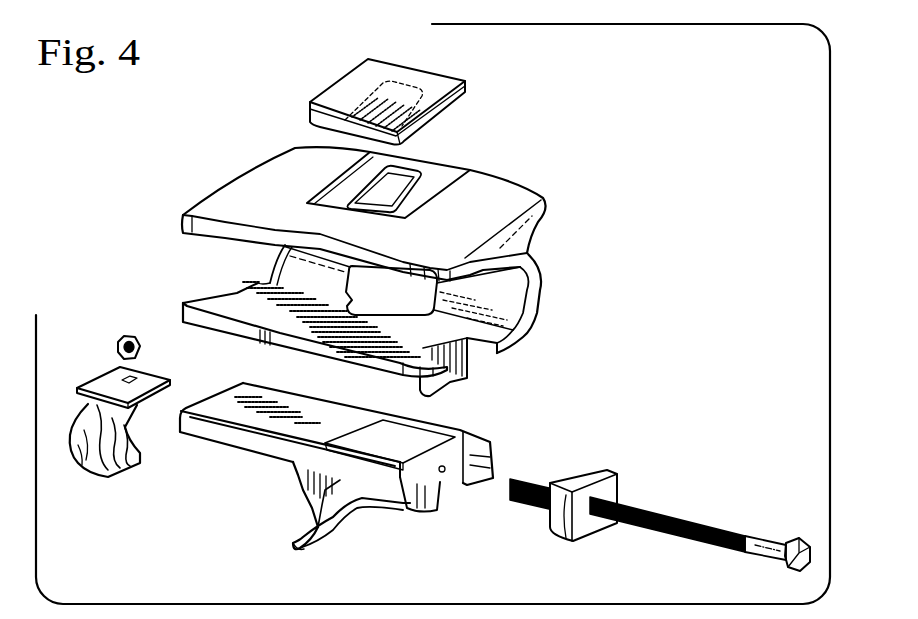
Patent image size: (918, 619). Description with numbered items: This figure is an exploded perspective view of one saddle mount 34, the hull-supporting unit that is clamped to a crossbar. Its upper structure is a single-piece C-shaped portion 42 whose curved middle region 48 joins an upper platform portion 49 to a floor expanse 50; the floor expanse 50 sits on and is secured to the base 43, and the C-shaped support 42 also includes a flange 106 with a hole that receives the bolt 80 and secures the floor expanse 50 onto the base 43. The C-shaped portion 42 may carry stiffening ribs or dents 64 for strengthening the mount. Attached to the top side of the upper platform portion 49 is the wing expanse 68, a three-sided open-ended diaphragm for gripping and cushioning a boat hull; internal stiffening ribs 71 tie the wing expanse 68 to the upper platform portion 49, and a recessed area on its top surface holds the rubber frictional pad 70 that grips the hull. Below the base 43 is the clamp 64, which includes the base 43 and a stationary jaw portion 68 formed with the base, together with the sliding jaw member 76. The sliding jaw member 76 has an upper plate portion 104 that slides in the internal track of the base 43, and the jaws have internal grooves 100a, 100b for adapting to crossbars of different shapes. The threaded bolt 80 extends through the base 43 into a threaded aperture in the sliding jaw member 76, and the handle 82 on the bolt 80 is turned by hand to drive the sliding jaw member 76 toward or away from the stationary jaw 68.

The saddle mount 34 is at (560, 144).
The C-shaped portion 42 is at (237, 295).
The base 43 is at (398, 497).
The curved middle region 48 is at (512, 312).
The upper platform portion 49 is at (215, 240).
The floor expanse 50 is at (200, 308).
The clamp 64 is at (373, 299).
The wing expanse 68 is at (300, 160).
The frictional pad 70 is at (430, 85).
The internal stiffening ribs 71 is at (392, 200).
The sliding jaw member 76 is at (90, 413).
The bolt 80 is at (672, 515).
The handle 82 is at (590, 478).
The groove 100a is at (306, 518).
The groove 100b is at (300, 535).
The upper plate portion 104 is at (105, 380).
The flange 106 is at (460, 368).